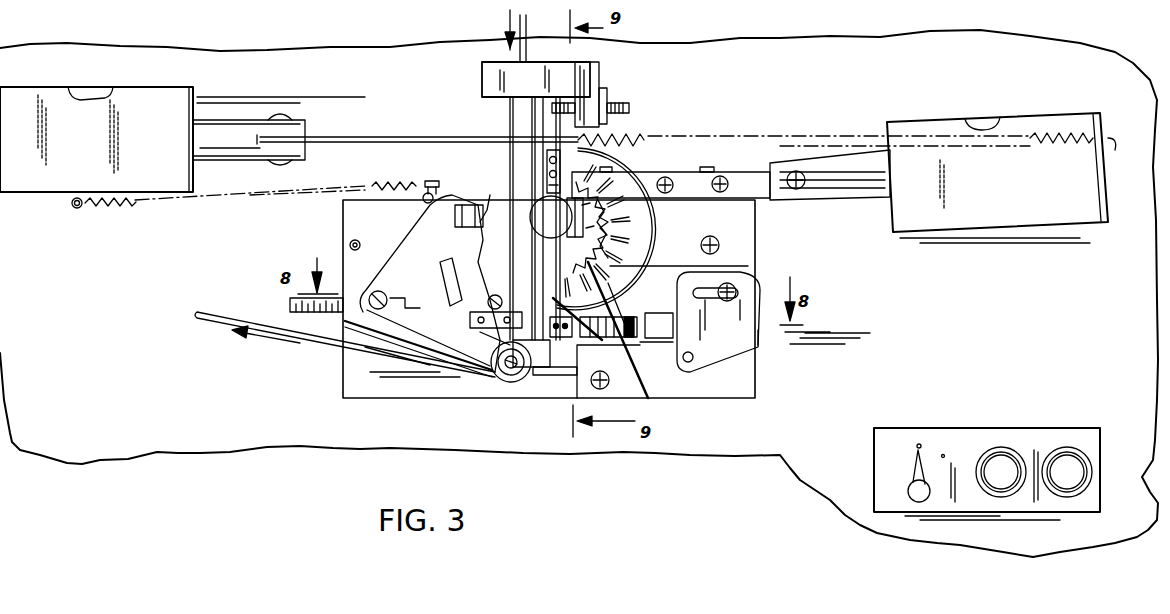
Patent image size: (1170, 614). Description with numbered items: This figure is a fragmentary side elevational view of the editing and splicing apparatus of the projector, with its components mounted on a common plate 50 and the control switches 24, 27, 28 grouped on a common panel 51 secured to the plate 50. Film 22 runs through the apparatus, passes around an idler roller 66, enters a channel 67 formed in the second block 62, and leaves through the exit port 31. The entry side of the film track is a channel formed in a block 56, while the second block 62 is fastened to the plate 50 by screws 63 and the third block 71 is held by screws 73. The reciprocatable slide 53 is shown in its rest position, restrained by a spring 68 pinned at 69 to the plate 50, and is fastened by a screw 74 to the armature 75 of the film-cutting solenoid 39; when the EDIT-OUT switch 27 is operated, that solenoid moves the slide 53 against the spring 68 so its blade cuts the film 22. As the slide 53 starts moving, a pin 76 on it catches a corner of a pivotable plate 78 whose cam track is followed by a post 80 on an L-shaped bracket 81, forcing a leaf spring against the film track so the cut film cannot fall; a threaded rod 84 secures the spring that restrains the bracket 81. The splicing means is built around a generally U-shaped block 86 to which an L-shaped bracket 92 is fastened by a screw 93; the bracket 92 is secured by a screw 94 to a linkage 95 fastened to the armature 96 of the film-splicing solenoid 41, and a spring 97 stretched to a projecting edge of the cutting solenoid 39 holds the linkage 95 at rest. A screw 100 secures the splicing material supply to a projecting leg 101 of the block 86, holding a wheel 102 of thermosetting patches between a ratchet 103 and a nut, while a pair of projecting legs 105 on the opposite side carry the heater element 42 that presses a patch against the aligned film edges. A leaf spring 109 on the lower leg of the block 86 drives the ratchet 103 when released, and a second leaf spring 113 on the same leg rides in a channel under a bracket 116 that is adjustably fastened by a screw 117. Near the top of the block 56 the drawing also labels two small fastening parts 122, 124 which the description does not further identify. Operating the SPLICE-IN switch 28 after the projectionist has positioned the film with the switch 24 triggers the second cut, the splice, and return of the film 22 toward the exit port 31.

The film 22 is at (545, 12).
The switch 24 is at (920, 495).
The switch 27 is at (990, 488).
The switch 28 is at (1082, 470).
The exit port 31 is at (345, 352).
The solenoid 39 is at (982, 118).
The solenoid 41 is at (90, 92).
The heater element 42 is at (490, 215).
The plate 50 is at (135, 432).
The panel 51 is at (1032, 440).
The reciprocatable slide 53 is at (688, 174).
The block 56 is at (583, 68).
The second block 62 is at (353, 210).
The screws 63 is at (352, 242).
The idler roller 66 is at (515, 384).
The channel 67 is at (405, 364).
The spring 68 is at (110, 205).
The pin 69 is at (77, 208).
The third block 71 is at (755, 232).
The screws 73 is at (720, 250).
The screw 74 is at (797, 170).
The armature 75 is at (835, 165).
The pin 76 is at (430, 181).
The plate 78 is at (398, 262).
The post 80 is at (466, 311).
The L-shaped bracket 81 is at (490, 347).
The threaded rod 84 is at (290, 302).
The U-shaped block 86 is at (500, 98).
The L-shaped bracket 92 is at (535, 182).
The screw 93 is at (545, 155).
The screw 94 is at (572, 140).
The linkage 95 is at (350, 122).
The armature 96 is at (237, 125).
The spring 97 is at (1060, 135).
The screw 100 is at (543, 228).
The projecting leg 101 is at (605, 214).
The wheel 102 is at (632, 238).
The ratchet 103 is at (590, 178).
The projecting legs 105 is at (490, 195).
The leaf spring 109 is at (611, 355).
The second leaf spring 113 is at (657, 317).
The bracket 116 is at (758, 335).
The screw 117 is at (740, 290).
The threaded rod 122 is at (620, 108).
The nut 124 is at (604, 92).